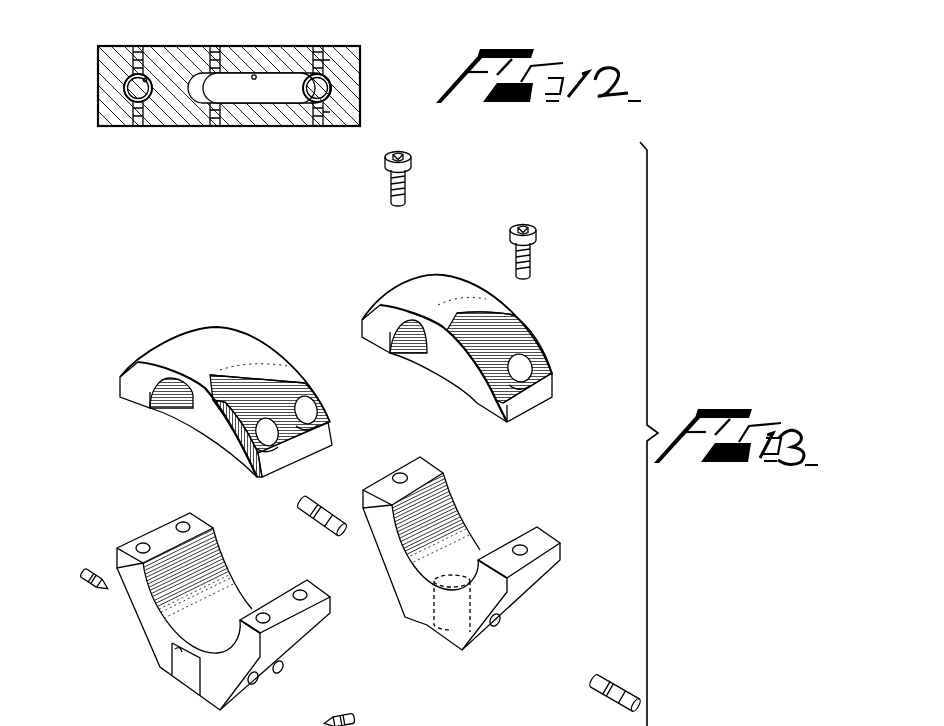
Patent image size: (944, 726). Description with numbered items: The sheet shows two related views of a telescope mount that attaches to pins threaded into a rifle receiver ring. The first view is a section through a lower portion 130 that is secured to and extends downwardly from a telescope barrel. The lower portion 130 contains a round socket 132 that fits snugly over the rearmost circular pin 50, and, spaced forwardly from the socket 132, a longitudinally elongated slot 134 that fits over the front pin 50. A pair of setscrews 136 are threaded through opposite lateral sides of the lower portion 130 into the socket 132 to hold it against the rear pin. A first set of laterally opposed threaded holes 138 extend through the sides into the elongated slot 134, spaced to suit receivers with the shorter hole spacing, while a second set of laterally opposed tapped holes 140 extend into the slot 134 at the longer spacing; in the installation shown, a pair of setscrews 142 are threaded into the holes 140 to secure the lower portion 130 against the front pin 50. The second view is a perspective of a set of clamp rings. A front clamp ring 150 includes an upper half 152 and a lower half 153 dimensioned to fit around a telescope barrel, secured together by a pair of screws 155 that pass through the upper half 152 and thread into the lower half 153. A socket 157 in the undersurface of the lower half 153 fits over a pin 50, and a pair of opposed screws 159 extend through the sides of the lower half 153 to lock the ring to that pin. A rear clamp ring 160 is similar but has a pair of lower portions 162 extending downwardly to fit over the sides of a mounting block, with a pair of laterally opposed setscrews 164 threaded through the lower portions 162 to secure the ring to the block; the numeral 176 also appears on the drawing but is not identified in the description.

In FIG. 12, the lower portion 130 is at (98, 54).
In FIG. 12, the circular pin 50 is at (127, 84).
In FIG. 12, the round socket 132 is at (148, 78).
In FIG. 12, the longitudinally elongated slot 134 is at (256, 74).
In FIG. 12, the setscrews 136 is at (138, 46).
In FIG. 12, the first set of laterally opposed threaded holes 138 is at (215, 46).
In FIG. 12, the second set of laterally opposed tapped holes 140 is at (318, 46).
In FIG. 12, the setscrews 142 is at (325, 62).
In FIG. 13, the front clamp ring 150 is at (465, 372).
In FIG. 13, the upper half 152 is at (372, 328).
In FIG. 13, the lower half 153 is at (375, 508).
In FIG. 13, the screws 155 is at (520, 250).
In FIG. 13, the socket 157 is at (440, 630).
In FIG. 13, the opposed screws 159 is at (313, 525).
In FIG. 13, the rear clamp ring 160 is at (125, 488).
In FIG. 13, the lower portions 162 is at (217, 693).
In FIG. 13, the setscrews 164 is at (88, 597).
In FIG. 13, the base 176 is at (202, 598).